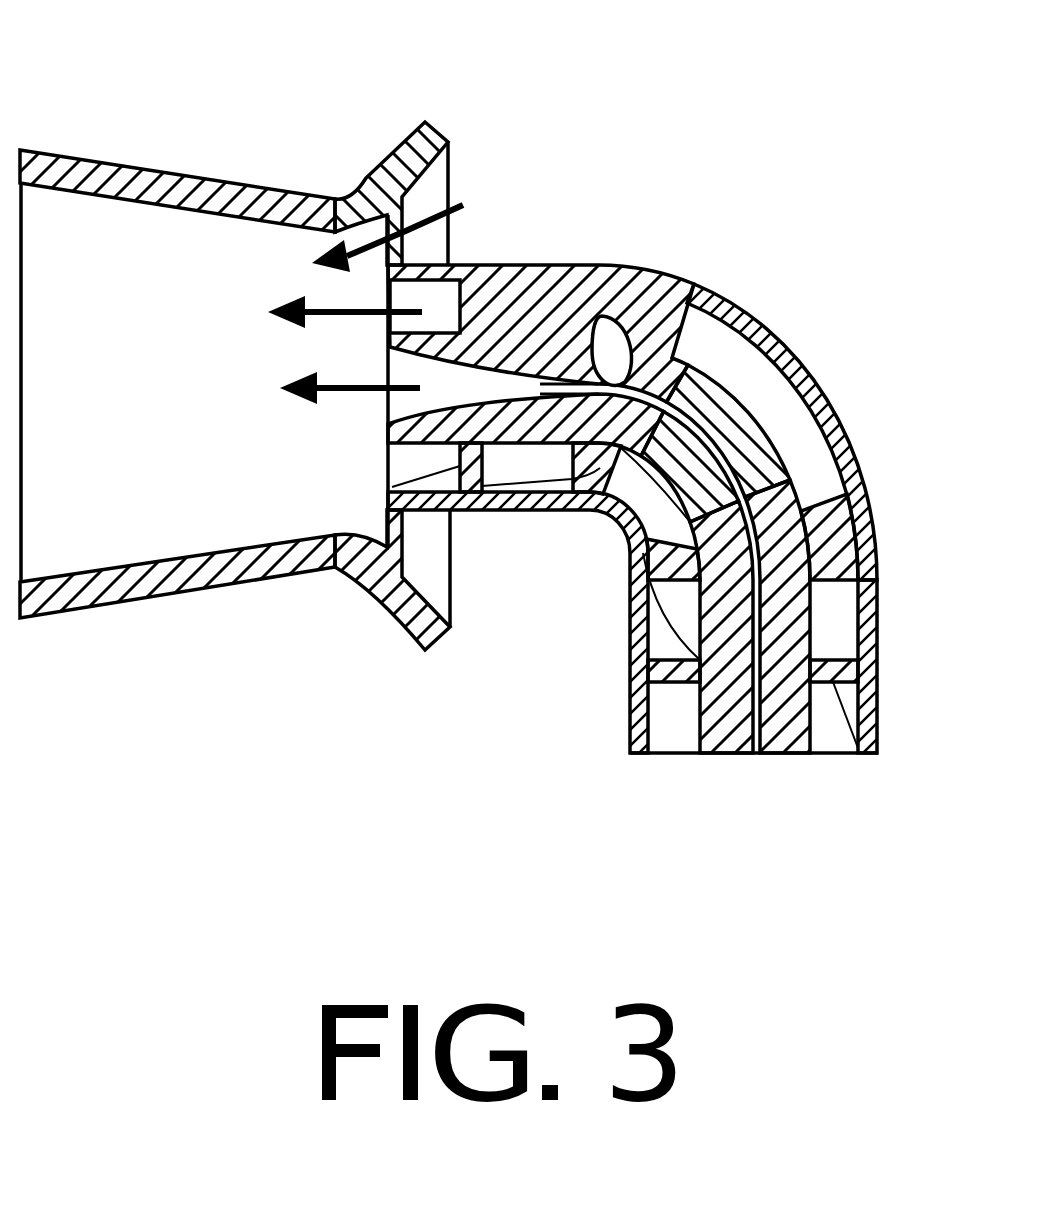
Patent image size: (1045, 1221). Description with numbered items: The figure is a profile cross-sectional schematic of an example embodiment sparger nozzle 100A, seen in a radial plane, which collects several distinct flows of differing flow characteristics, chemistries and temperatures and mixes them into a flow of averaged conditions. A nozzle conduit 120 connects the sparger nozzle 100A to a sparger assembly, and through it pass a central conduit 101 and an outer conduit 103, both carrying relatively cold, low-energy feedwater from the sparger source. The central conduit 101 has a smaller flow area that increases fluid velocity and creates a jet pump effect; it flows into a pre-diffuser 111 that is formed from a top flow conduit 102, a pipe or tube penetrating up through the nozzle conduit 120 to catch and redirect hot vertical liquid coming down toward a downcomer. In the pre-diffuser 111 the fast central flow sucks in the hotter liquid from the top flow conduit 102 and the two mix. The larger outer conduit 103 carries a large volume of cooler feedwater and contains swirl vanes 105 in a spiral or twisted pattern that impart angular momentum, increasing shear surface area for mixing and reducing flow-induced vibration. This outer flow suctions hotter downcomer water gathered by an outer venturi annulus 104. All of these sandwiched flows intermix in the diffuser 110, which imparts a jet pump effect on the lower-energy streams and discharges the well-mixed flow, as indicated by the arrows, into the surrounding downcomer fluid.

The sparger nozzle 100A is at (150, 37).
The central conduit 101 is at (740, 757).
The top flow conduit 102 is at (606, 350).
The outer conduit 103 is at (677, 757).
The outer venturi annulus 104 is at (436, 564).
The swirl vanes 105 is at (768, 337).
The diffuser 110 is at (115, 590).
The pre-diffuser 111 is at (432, 405).
The nozzle conduit 120 is at (880, 703).